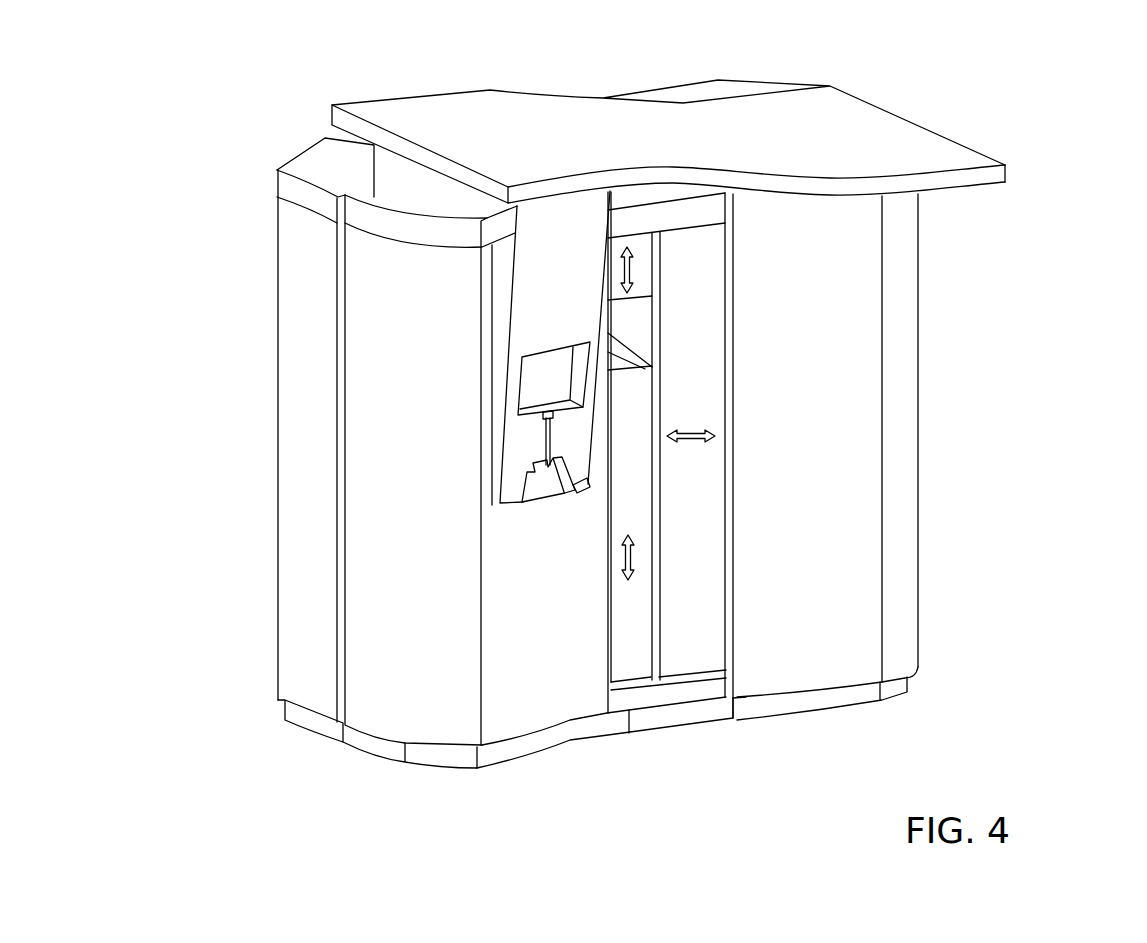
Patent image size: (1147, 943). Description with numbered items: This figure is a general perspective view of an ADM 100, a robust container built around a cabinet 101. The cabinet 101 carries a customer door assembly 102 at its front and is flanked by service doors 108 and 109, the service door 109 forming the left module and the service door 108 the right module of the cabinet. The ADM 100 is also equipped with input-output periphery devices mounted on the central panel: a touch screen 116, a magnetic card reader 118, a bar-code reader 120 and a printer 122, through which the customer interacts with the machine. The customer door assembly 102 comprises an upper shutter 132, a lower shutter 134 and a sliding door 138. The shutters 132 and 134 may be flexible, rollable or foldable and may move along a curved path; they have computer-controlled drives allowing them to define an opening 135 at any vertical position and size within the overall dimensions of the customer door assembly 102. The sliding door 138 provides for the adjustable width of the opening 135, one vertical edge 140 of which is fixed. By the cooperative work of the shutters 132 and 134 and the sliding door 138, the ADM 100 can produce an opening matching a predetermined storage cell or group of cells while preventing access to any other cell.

The ADM 100 is at (975, 278).
The cabinet 101 is at (325, 170).
The customer door assembly 102 is at (735, 733).
The service door 108 is at (852, 671).
The service door 109 is at (536, 704).
The touch screen 116 is at (557, 377).
The magnetic card reader 118 is at (555, 438).
The bar-code reader 120 is at (579, 499).
The printer 122 is at (554, 487).
The upper shutter 132 is at (643, 273).
The lower shutter 134 is at (630, 627).
The opening 135 is at (625, 325).
The sliding door 138 is at (710, 503).
The vertical edge 140 is at (622, 328).